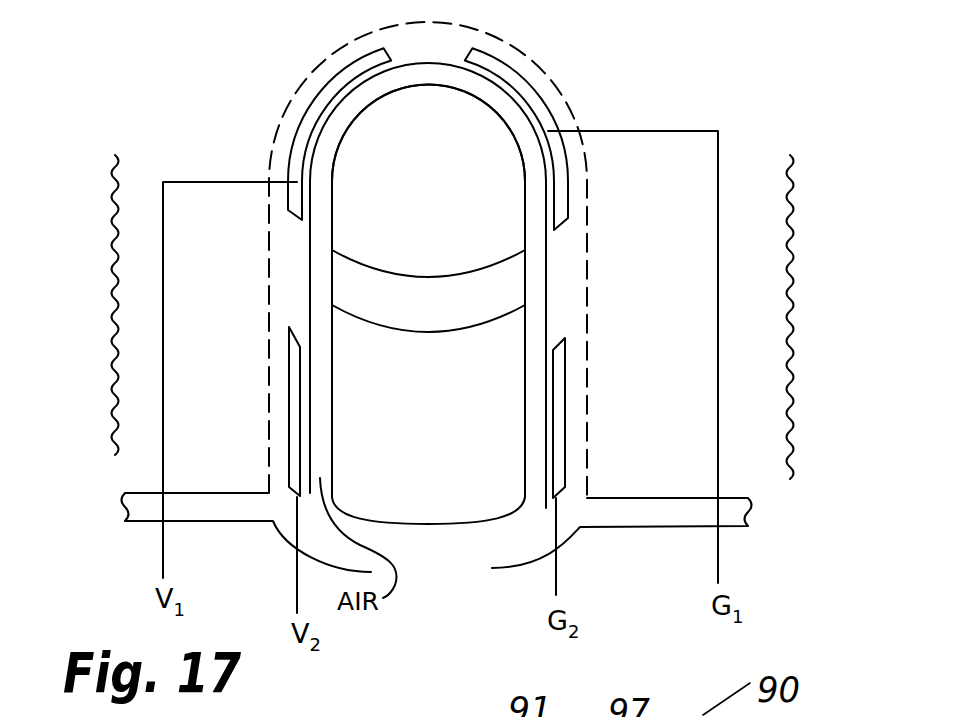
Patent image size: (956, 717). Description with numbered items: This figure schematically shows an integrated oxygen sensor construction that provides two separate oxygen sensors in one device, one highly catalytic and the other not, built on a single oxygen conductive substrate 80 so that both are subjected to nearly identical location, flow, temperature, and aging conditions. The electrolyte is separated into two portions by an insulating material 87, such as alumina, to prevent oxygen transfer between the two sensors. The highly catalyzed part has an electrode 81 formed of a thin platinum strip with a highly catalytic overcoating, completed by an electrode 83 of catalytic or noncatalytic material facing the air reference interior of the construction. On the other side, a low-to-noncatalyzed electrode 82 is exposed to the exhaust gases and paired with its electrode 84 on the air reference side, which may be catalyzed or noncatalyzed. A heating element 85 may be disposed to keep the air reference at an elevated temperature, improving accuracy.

The oxygen conductive substrate 80 is at (428, 305).
The electrode 81 is at (537, 107).
The low-to-noncatalyzed electrode 82 is at (557, 377).
The electrode 83 is at (320, 108).
The electrode 84 is at (297, 365).
The heating element 85 is at (110, 307).
The insulating material 87 is at (588, 218).